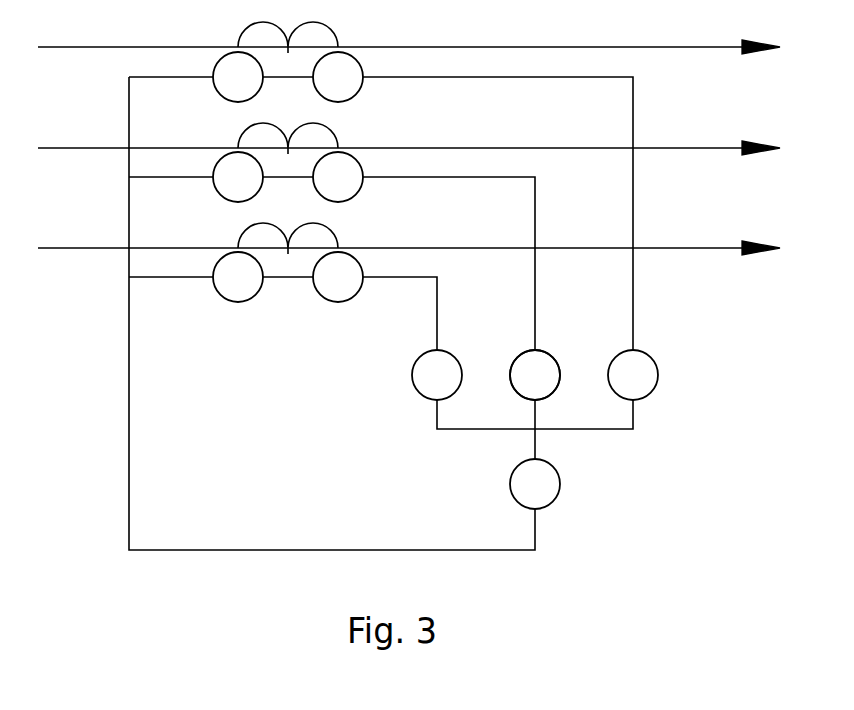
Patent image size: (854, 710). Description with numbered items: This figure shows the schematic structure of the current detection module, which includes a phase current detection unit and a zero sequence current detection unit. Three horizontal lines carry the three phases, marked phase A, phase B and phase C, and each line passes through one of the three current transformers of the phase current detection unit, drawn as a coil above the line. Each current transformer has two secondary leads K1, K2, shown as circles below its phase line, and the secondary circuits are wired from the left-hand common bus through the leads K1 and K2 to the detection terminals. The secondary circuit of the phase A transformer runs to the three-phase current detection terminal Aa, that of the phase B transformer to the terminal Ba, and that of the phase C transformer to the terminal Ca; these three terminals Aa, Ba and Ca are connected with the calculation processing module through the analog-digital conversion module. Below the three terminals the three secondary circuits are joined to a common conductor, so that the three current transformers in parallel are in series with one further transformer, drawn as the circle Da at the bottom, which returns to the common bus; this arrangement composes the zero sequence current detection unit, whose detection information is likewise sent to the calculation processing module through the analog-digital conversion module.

The phase A line A is at (409, 34).
The phase B line B is at (409, 135).
The phase C line C is at (409, 235).
The secondary lead of current transformer K1 is at (238, 177).
The secondary lead of current transformer K2 is at (338, 177).
The three-phase current detection terminal Ca is at (437, 375).
The three-phase current detection terminal Ba is at (535, 375).
The three-phase current detection terminal Aa is at (633, 375).
The common relay Da is at (535, 484).